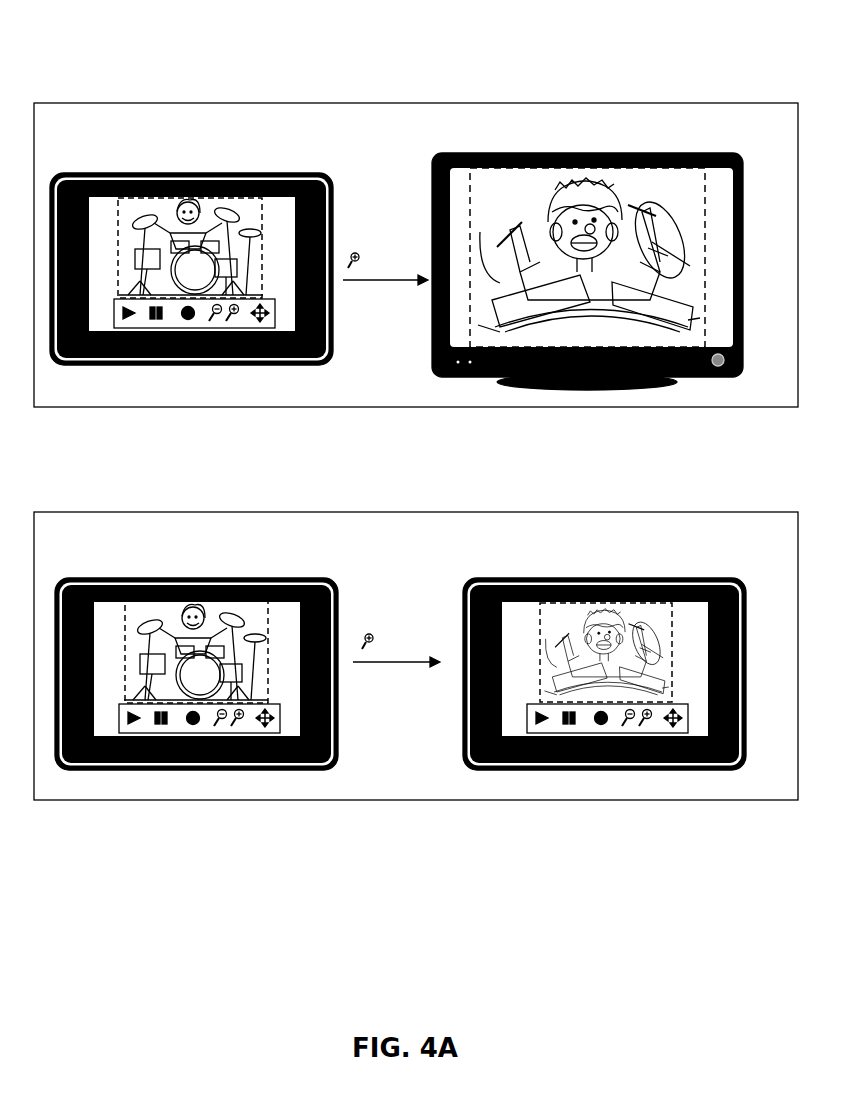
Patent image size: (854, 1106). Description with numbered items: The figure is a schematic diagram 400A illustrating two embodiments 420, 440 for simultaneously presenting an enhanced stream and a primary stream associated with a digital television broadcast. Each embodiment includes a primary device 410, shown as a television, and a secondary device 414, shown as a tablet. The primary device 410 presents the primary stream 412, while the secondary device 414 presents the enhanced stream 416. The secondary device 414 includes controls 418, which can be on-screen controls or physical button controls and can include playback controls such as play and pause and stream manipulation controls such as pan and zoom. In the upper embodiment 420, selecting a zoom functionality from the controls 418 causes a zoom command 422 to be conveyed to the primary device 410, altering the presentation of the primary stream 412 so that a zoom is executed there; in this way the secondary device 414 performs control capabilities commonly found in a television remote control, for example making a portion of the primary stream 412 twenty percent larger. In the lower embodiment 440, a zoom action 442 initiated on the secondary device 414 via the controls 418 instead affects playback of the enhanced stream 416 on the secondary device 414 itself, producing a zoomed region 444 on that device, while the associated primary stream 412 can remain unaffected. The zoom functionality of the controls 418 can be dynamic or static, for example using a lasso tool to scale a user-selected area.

The zoom operation diagram 400A is at (735, 43).
The embodiment 420 is at (762, 127).
The embodiment 440 is at (757, 534).
The secondary device 414 is at (228, 173).
The enhanced stream 416 is at (120, 218).
The controls 418 is at (276, 318).
The primary device 410 is at (745, 207).
The primary stream 412 is at (705, 258).
The zoom command 422 is at (385, 259).
The zoom command 442 is at (396, 639).
The zoomed region displayed on mobile device 444 is at (540, 625).